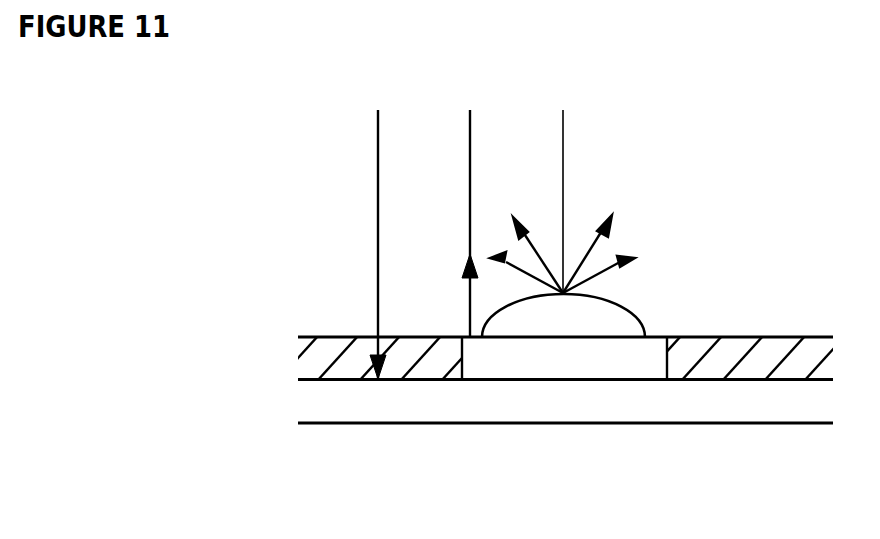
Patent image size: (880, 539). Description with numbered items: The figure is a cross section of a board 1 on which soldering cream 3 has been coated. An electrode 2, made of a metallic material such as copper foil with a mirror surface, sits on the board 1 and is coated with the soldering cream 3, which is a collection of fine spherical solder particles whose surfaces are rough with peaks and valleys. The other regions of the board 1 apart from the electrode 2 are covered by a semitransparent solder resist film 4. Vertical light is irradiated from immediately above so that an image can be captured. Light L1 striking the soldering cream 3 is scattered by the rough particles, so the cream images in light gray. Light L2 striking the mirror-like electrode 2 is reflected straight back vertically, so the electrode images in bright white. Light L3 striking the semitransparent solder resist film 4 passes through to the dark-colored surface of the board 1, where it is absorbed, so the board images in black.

The board 1 is at (747, 412).
The electrode 2 is at (562, 365).
The soldering cream 3 is at (630, 310).
The semitransparent solder resist film 4 is at (331, 350).
The light L1 is at (561, 177).
The light L2 is at (471, 199).
The light L3 is at (376, 220).